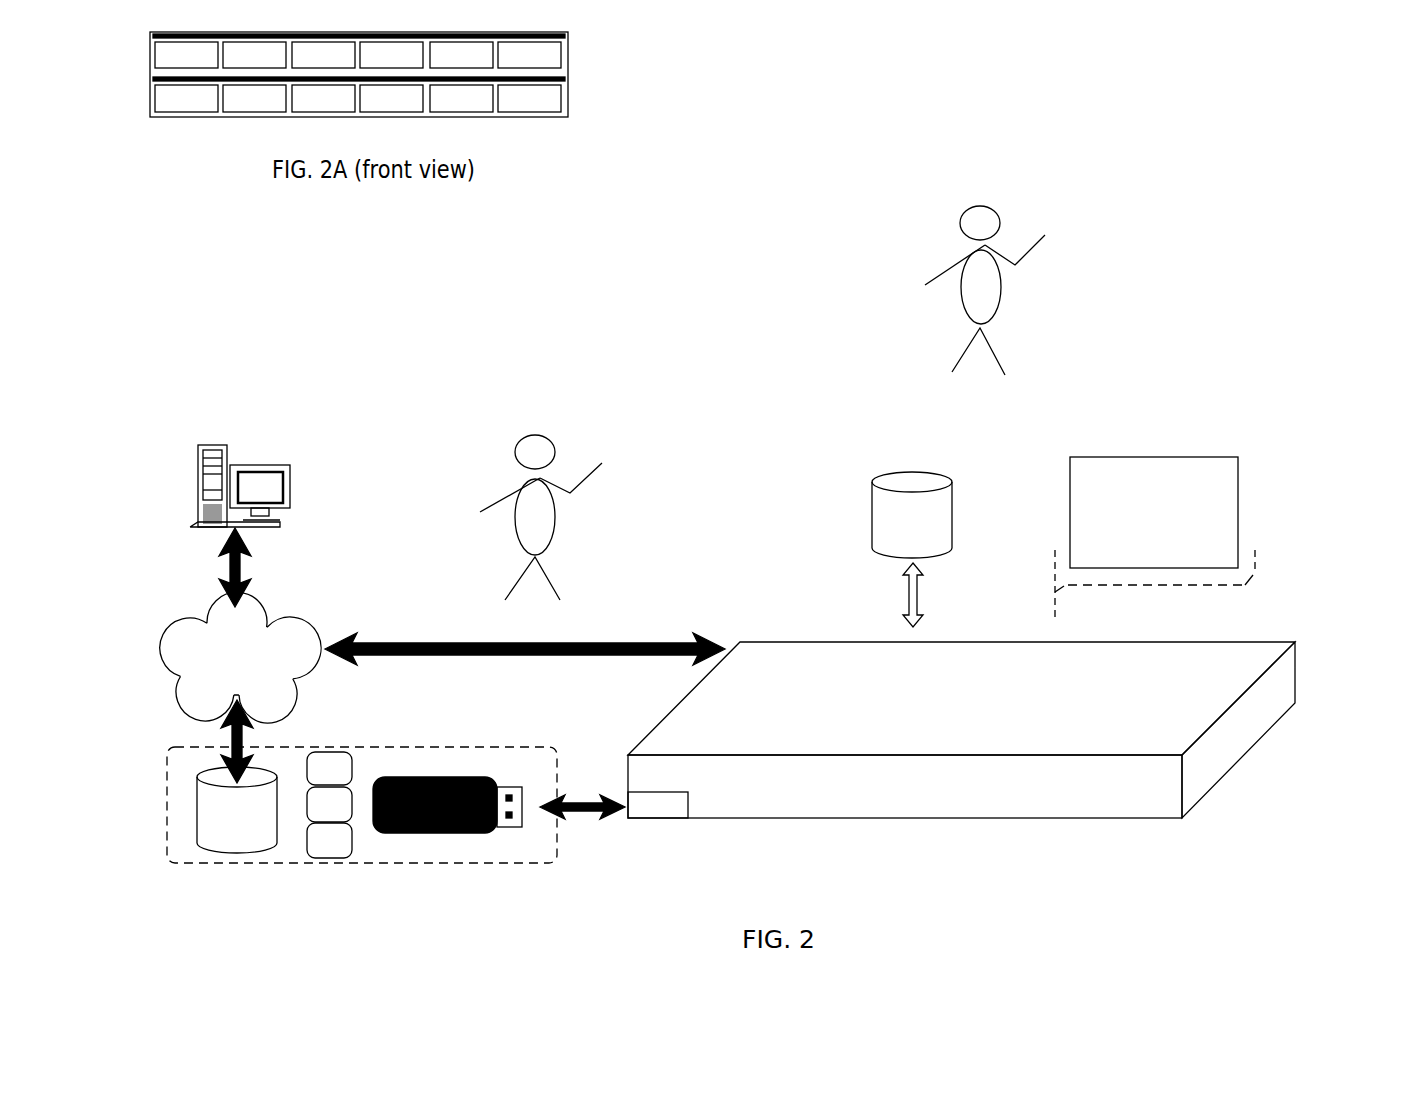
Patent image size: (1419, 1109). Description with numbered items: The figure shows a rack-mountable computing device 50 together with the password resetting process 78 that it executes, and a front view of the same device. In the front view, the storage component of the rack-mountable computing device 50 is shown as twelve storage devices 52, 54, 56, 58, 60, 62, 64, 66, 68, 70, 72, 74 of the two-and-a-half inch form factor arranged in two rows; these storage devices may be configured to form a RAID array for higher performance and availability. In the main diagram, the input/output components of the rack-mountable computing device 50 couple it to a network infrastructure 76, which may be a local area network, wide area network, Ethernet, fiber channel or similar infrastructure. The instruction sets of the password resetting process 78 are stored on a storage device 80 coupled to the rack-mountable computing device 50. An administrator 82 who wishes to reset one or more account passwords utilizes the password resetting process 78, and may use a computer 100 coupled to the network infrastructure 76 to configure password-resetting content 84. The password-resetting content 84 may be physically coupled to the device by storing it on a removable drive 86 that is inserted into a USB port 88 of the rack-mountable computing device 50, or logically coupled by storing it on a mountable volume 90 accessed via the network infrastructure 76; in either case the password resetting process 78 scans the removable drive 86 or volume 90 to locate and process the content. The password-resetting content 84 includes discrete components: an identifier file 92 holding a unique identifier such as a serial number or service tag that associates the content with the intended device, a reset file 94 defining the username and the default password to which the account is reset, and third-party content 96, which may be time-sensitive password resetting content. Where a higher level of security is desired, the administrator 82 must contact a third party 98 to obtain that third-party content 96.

In FIG. 2A, the rack-mountable computing device 50 is at (570, 94).
In FIG. 2, the rack-mountable computing device 50 is at (1255, 705).
In FIG. 2A, the storage device 52 is at (186, 98).
In FIG. 2A, the storage device 54 is at (254, 98).
In FIG. 2A, the storage device 56 is at (323, 98).
In FIG. 2A, the storage device 58 is at (391, 98).
In FIG. 2A, the storage device 60 is at (461, 98).
In FIG. 2A, the storage device 62 is at (529, 98).
In FIG. 2A, the storage device 64 is at (186, 55).
In FIG. 2A, the storage device 66 is at (254, 55).
In FIG. 2A, the storage device 68 is at (323, 55).
In FIG. 2A, the storage device 70 is at (391, 55).
In FIG. 2A, the storage device 72 is at (461, 55).
In FIG. 2A, the storage device 74 is at (529, 55).
In FIG. 2, the network infrastructure 76 is at (240, 657).
In FIG. 2, the password resetting process 78 is at (1238, 513).
In FIG. 2, the storage device 80 is at (912, 515).
In FIG. 2, the administrator 82 is at (508, 452).
In FIG. 2, the password-resetting content 84 is at (560, 840).
In FIG. 2, the removable drive 86 is at (447, 805).
In FIG. 2, the USB port 88 is at (658, 806).
In FIG. 2, the volume 90 is at (237, 810).
In FIG. 2, the identifier file 92 is at (329, 768).
In FIG. 2, the reset file 94 is at (329, 804).
In FIG. 2, the third-party content 96 is at (329, 840).
In FIG. 2, the third party 98 is at (950, 223).
In FIG. 2, the computer 100 is at (253, 488).